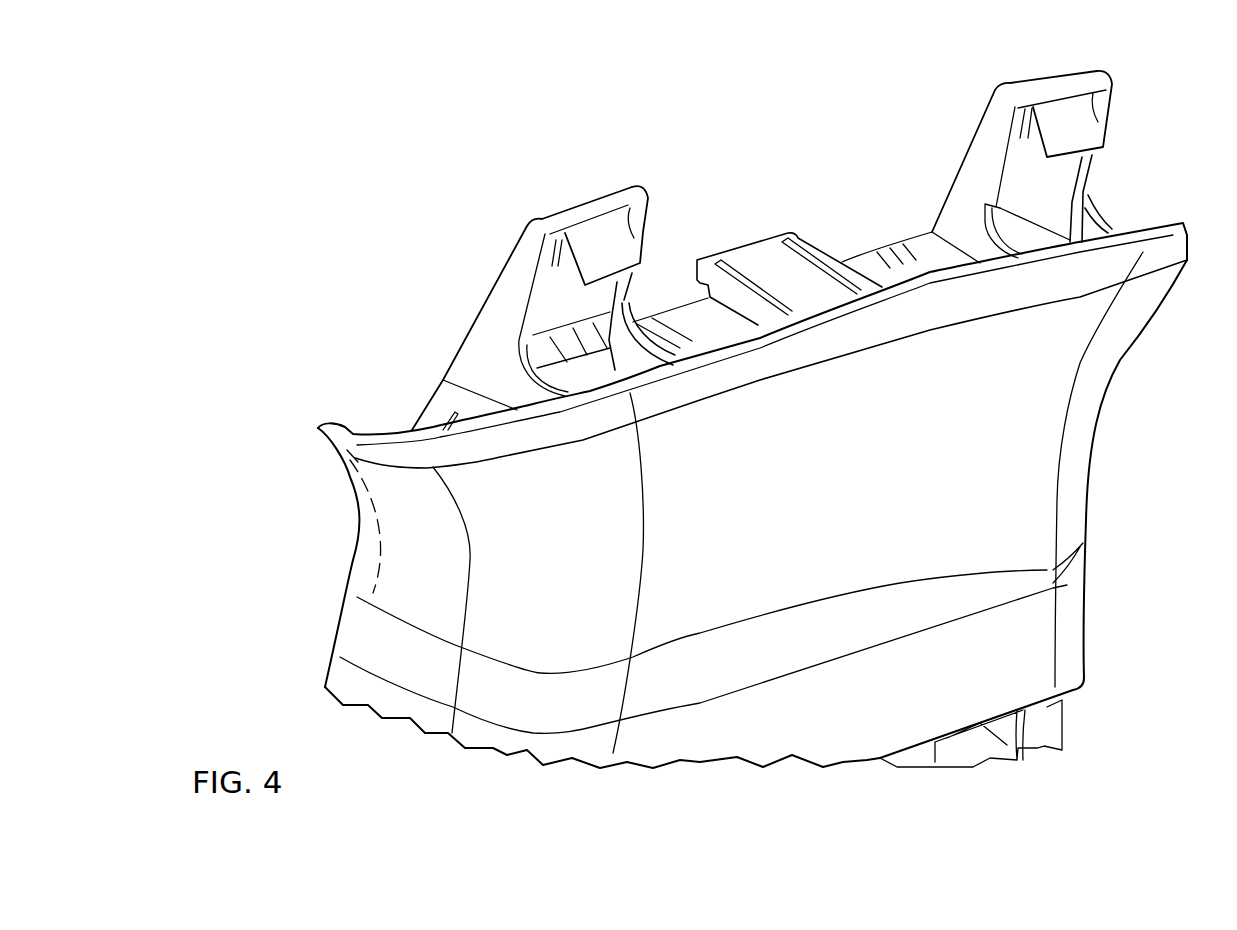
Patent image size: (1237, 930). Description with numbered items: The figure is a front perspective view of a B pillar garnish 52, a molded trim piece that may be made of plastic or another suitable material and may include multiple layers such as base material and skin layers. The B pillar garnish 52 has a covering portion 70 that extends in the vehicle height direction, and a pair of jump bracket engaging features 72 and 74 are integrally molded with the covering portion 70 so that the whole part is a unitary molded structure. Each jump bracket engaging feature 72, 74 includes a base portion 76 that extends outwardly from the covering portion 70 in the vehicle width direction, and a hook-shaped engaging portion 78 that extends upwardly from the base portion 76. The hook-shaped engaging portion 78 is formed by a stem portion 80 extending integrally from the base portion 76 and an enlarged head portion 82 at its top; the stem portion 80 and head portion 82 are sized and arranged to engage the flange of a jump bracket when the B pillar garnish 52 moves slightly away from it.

The B pillar garnish 52 is at (692, 153).
The covering portion 70 is at (940, 630).
The jump bracket engaging feature 72 is at (505, 189).
The jump bracket engaging feature 74 is at (1041, 60).
The base portion 76 is at (572, 377).
The hook-shaped engaging portion 78 is at (473, 285).
The stem portion 80 is at (467, 360).
The enlarged head portion 82 is at (622, 247).